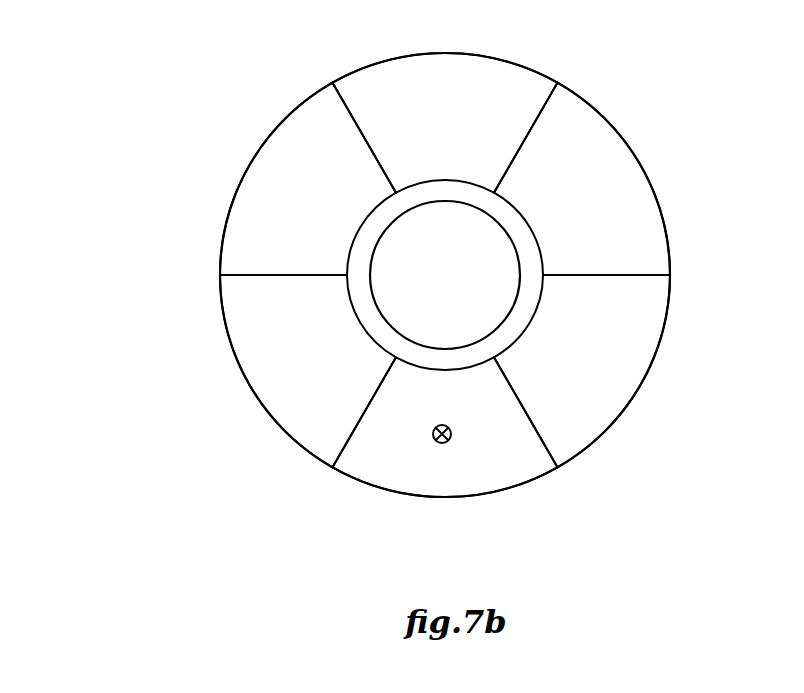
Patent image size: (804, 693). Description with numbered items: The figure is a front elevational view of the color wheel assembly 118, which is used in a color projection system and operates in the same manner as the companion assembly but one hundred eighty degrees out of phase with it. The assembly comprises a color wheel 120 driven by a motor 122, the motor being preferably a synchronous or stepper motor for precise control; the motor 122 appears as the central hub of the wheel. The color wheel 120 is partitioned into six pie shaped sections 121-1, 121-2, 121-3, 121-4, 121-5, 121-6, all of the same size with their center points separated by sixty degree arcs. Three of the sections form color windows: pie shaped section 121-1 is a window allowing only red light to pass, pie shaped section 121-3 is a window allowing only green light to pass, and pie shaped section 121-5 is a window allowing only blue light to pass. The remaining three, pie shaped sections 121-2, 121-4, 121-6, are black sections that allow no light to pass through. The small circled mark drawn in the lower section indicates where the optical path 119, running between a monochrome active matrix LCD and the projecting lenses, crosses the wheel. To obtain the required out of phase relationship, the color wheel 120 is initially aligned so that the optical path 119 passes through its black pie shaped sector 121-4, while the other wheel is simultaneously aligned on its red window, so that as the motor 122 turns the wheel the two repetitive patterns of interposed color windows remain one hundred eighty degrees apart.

The color wheel assembly 118 is at (134, 160).
The optical path 119 is at (451, 436).
The color wheel 120 is at (445, 290).
The pie shaped section 121-1 is at (411, 83).
The pie shaped section 121-2 is at (282, 155).
The pie shaped section 121-3 is at (286, 418).
The pie shaped section 121-4 is at (411, 485).
The pie shaped section 121-5 is at (546, 418).
The pie shaped section 121-6 is at (546, 155).
The motor 122 is at (423, 283).